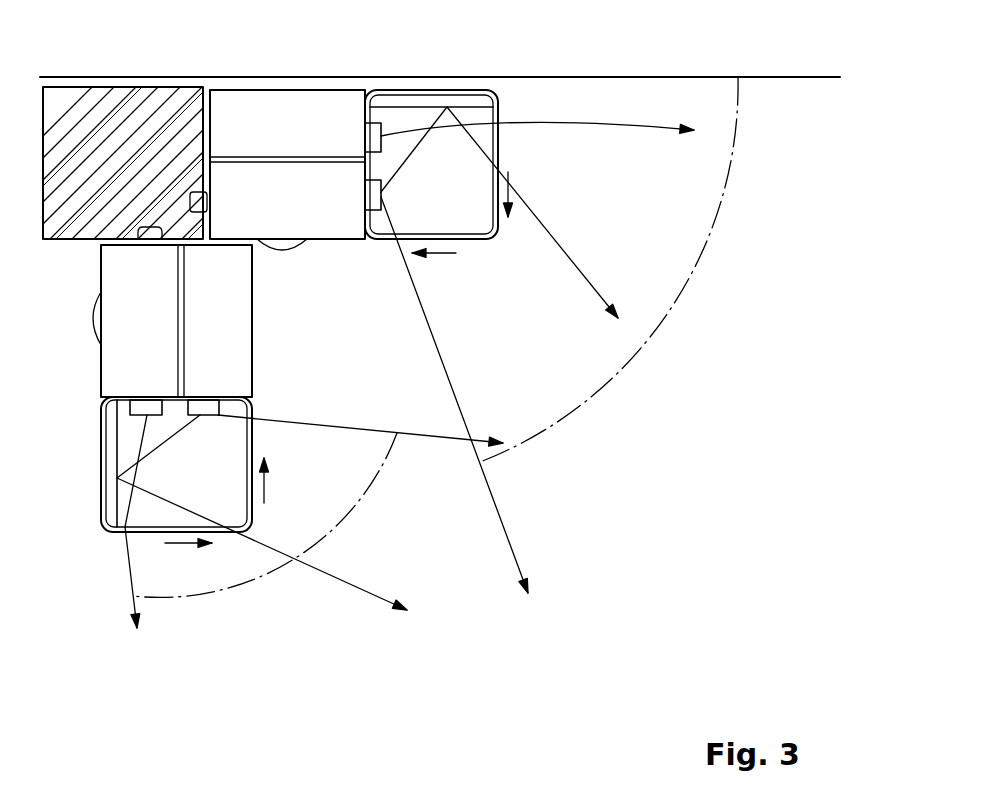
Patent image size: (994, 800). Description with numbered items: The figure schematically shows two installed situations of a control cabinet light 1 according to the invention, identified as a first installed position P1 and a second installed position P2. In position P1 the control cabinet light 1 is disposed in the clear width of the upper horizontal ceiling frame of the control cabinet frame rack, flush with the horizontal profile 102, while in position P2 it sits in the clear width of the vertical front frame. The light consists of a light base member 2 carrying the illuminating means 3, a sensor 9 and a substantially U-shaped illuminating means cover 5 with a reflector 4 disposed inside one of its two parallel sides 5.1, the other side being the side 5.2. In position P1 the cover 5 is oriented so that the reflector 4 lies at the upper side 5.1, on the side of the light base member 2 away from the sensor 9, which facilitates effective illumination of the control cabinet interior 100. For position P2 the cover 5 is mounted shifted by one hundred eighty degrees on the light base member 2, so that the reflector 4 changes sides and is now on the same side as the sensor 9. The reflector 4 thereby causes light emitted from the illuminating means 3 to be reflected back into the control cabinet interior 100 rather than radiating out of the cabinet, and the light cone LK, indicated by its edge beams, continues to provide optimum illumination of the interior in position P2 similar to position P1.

The control cabinet light 1 is at (341, 302).
The light base member 2 is at (250, 90).
The illuminating means 3 is at (373, 123).
The reflector 4 is at (420, 105).
The illuminating means cover 5 is at (503, 97).
The parallel side of illuminating means cover 5.1 is at (470, 90).
The side of illuminating means cover 5.2 is at (499, 150).
The sensor 9 is at (286, 246).
The control cabinet interior 100 is at (780, 250).
The horizontal profile 102 is at (128, 110).
The first installed position P1 is at (312, 113).
The second installed position P2 is at (113, 263).
The light cone LK is at (655, 328).